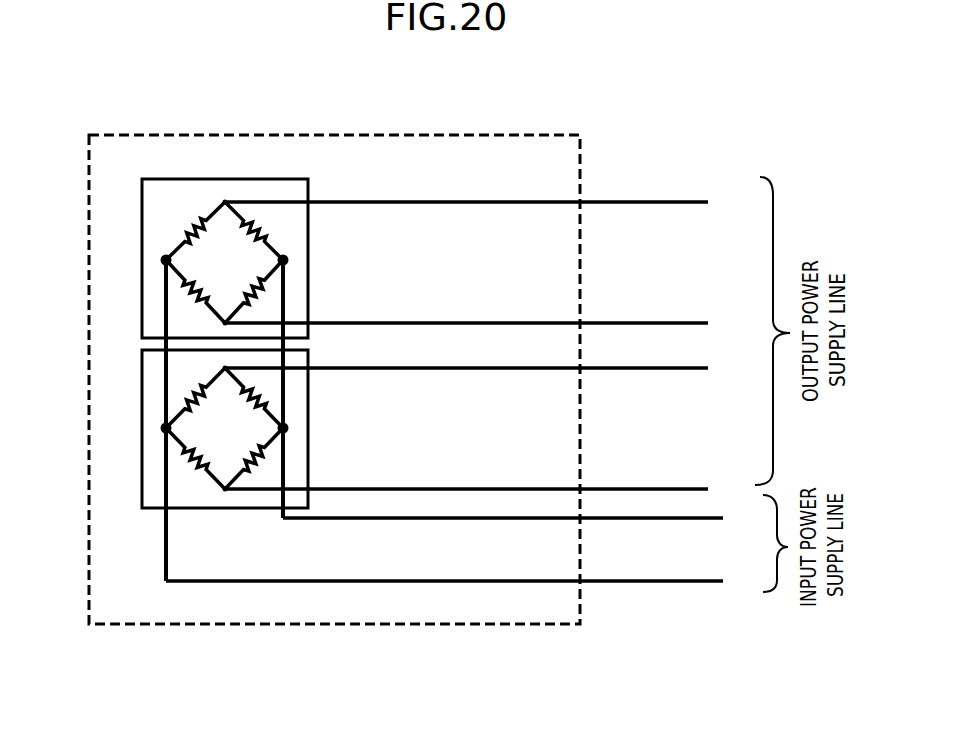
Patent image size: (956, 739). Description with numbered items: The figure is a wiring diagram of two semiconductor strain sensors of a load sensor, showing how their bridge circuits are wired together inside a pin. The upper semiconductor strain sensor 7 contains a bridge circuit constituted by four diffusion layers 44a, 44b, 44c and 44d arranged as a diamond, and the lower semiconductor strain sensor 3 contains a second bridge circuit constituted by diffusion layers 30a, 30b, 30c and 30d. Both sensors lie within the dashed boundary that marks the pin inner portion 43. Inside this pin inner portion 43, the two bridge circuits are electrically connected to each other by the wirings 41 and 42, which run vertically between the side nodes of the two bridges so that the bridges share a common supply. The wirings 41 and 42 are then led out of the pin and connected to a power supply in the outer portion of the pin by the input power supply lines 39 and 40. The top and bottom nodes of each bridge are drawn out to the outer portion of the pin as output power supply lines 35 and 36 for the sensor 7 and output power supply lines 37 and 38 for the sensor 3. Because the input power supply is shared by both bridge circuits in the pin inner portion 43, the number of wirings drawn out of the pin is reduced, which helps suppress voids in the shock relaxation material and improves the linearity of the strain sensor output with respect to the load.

The semiconductor strain sensor 3 is at (152, 467).
The semiconductor strain sensor 7 is at (150, 245).
The diffusion layer 30a is at (260, 407).
The diffusion layer 30b is at (243, 470).
The diffusion layer 30c is at (198, 467).
The diffusion layer 30d is at (203, 393).
The output power supply line 35 is at (484, 202).
The output power supply line 36 is at (484, 323).
The output power supply line 37 is at (484, 369).
The output power supply line 38 is at (484, 488).
The input power supply line 39 is at (522, 518).
The input power supply line 40 is at (463, 580).
The wiring 41 is at (285, 380).
The wiring 42 is at (160, 372).
The pin inner portion 43 is at (525, 626).
The diffusion layer 44a is at (260, 284).
The diffusion layer 44b is at (253, 227).
The diffusion layer 44c is at (205, 302).
The diffusion layer 44d is at (193, 224).